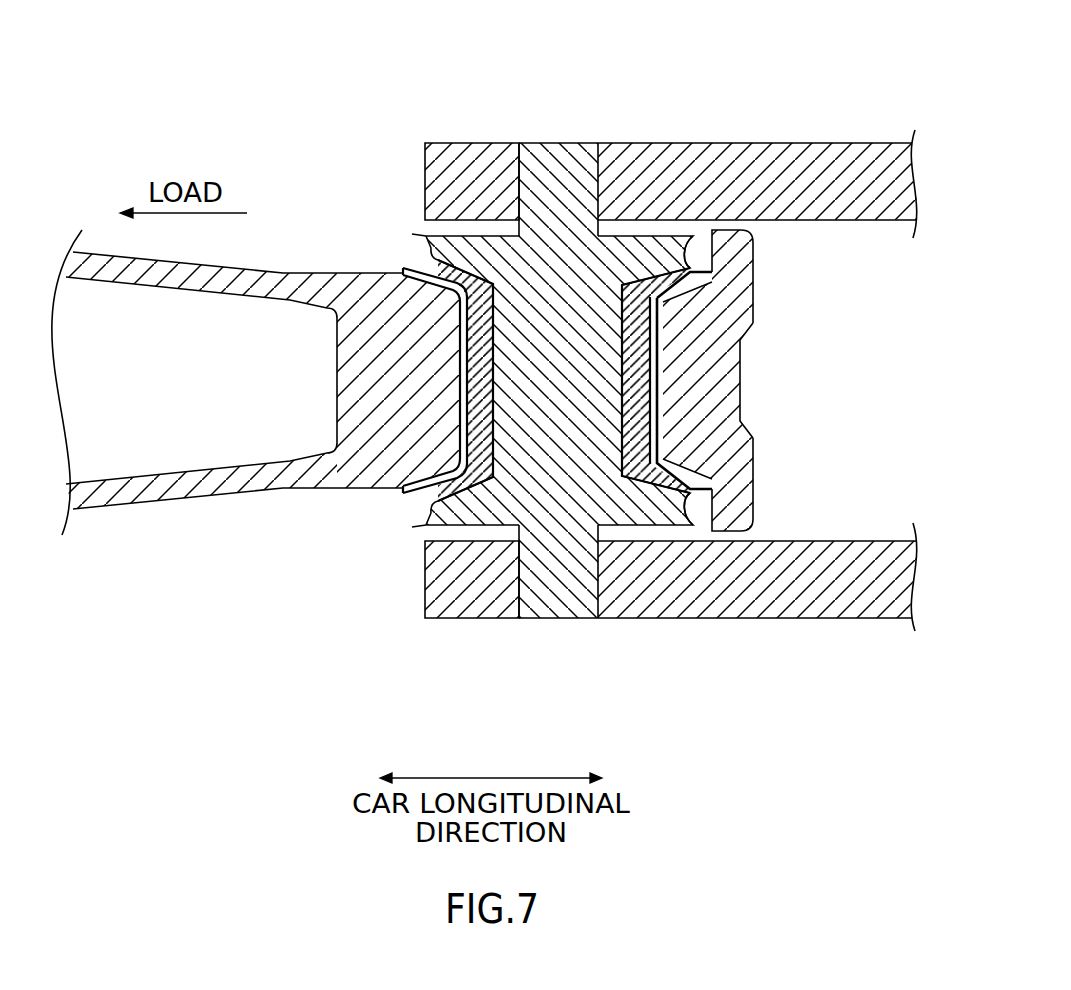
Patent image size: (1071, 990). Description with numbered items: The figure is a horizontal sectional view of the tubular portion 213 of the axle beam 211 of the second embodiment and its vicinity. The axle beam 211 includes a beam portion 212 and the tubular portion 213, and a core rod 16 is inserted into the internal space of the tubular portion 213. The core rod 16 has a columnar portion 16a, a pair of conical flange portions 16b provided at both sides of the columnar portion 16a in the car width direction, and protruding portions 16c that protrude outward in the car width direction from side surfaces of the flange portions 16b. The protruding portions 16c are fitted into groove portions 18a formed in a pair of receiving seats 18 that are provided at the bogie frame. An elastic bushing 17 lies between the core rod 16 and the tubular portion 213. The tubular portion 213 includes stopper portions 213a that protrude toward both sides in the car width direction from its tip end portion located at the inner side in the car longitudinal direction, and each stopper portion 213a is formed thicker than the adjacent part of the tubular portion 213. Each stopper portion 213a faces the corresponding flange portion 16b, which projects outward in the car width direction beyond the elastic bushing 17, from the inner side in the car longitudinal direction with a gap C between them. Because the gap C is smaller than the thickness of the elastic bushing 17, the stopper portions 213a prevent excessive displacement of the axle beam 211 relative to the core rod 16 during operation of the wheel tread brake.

The core rod 16 is at (420, 525).
The columnar portion 16a is at (605, 405).
The flange portion 16b is at (648, 238).
The protruding portion 16c is at (565, 155).
The elastic bushing 17 is at (640, 375).
The receiving seat 18 is at (843, 143).
The groove portion 18a is at (510, 182).
The axle beam 211 is at (260, 548).
The beam portion 212 is at (172, 507).
The tubular portion 213 is at (755, 460).
The stopper portion 213a is at (731, 240).
The gap C is at (703, 242).